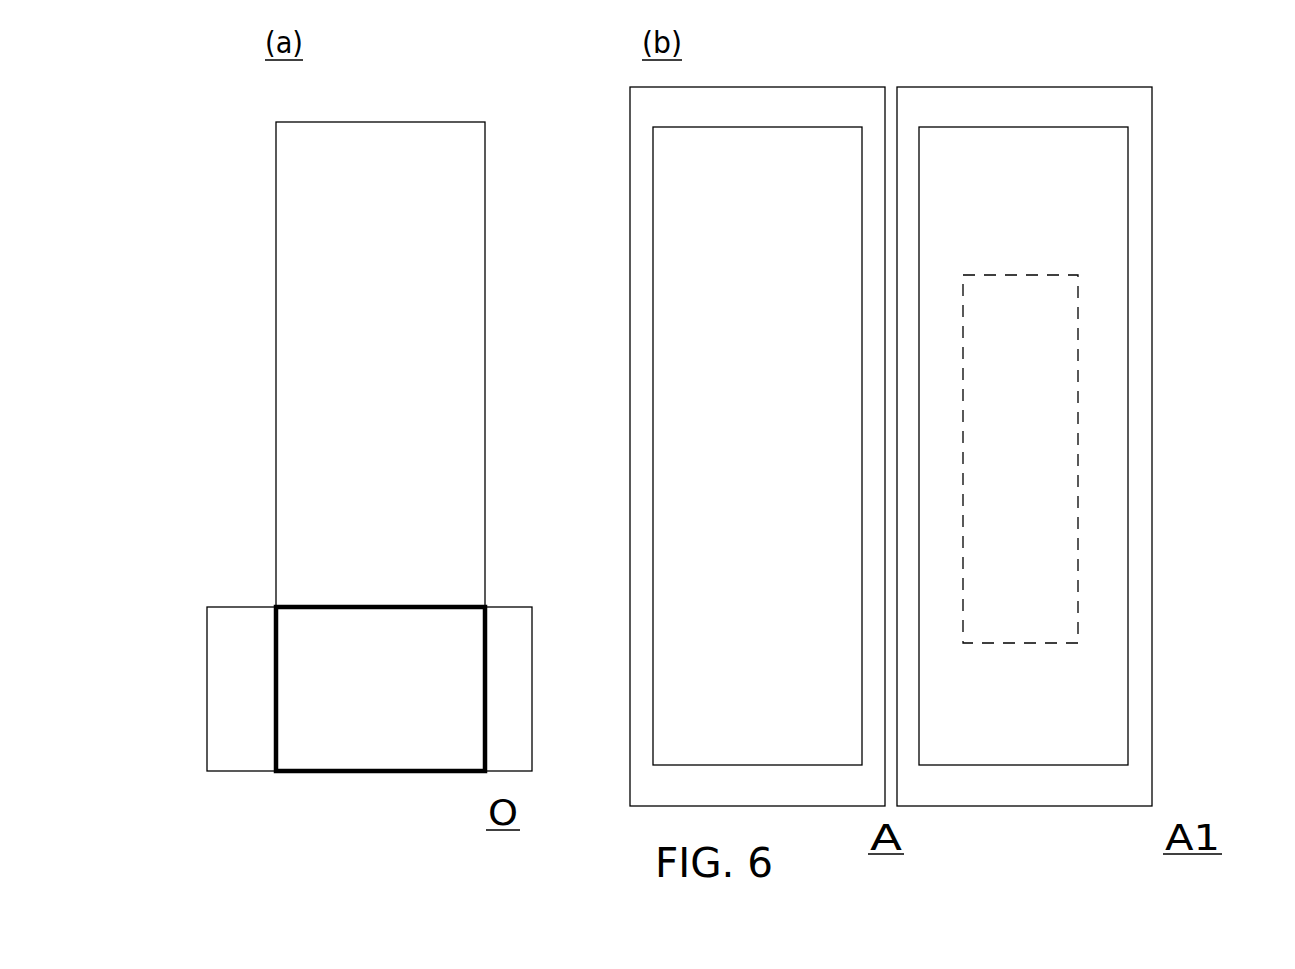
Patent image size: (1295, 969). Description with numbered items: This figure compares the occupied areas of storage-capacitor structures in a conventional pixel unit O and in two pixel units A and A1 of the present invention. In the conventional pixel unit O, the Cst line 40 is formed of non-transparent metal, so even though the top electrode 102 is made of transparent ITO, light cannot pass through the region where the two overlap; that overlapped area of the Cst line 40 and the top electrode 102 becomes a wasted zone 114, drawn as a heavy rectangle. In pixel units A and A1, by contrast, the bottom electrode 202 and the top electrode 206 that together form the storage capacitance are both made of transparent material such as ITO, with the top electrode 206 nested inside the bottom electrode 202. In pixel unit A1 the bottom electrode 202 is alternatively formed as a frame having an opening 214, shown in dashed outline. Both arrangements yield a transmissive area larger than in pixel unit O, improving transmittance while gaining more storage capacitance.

The top electrode 102 is at (296, 359).
The wasted zone 114 is at (289, 627).
The Cst line 40 is at (224, 704).
The bottom electrode 202 is at (1001, 95).
The top electrode 206 is at (705, 220).
The opening 214 is at (1096, 444).